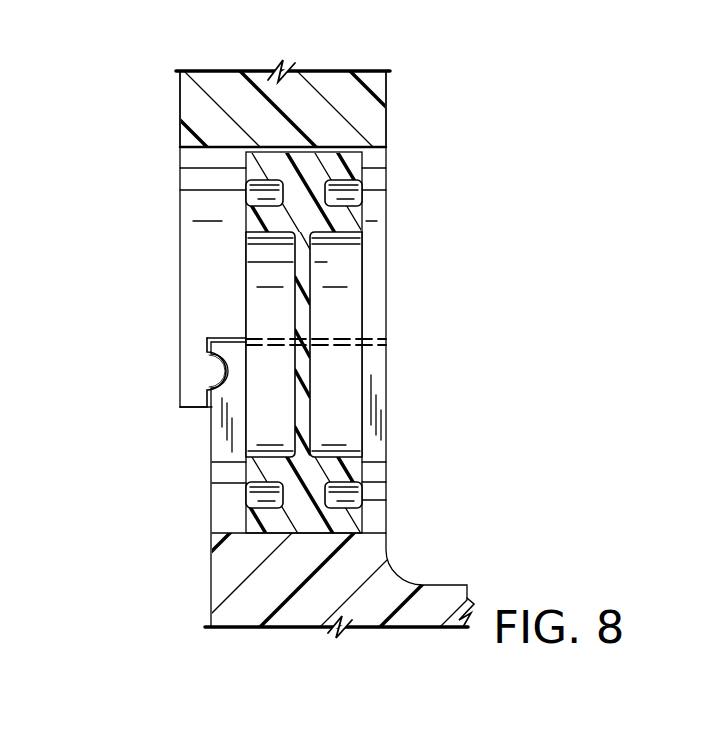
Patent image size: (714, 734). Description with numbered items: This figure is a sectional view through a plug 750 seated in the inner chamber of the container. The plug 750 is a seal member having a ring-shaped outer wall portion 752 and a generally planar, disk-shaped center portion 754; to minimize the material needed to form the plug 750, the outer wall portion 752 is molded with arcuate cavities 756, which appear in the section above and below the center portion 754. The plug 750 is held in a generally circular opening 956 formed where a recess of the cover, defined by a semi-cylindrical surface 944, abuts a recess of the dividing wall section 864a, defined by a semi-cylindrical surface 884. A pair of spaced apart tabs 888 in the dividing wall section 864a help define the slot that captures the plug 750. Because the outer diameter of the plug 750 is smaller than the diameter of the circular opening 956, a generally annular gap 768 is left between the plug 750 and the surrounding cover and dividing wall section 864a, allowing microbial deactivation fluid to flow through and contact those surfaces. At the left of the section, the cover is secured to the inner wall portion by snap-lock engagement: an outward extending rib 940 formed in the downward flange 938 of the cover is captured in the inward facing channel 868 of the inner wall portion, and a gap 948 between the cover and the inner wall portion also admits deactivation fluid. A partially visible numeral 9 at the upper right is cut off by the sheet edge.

The annular gap 768 is at (270, 147).
The outer member (numeral truncated at sheet edge) 9 is at (384, 89).
The semi-cylindrical surface 944 is at (212, 150).
The circular opening 956 is at (389, 262).
The outer wall portion 752 is at (364, 166).
The plug 750 is at (370, 211).
The semi-cylindrical surface 884 is at (296, 522).
The center portion 754 is at (305, 413).
The tabs 888 is at (223, 487).
The arcuate cavities 756 is at (342, 190).
The gap 948 is at (213, 355).
The channel 868 is at (219, 379).
The rib 940 is at (224, 375).
The flange 938 is at (181, 409).
The dividing wall section 864a is at (372, 554).